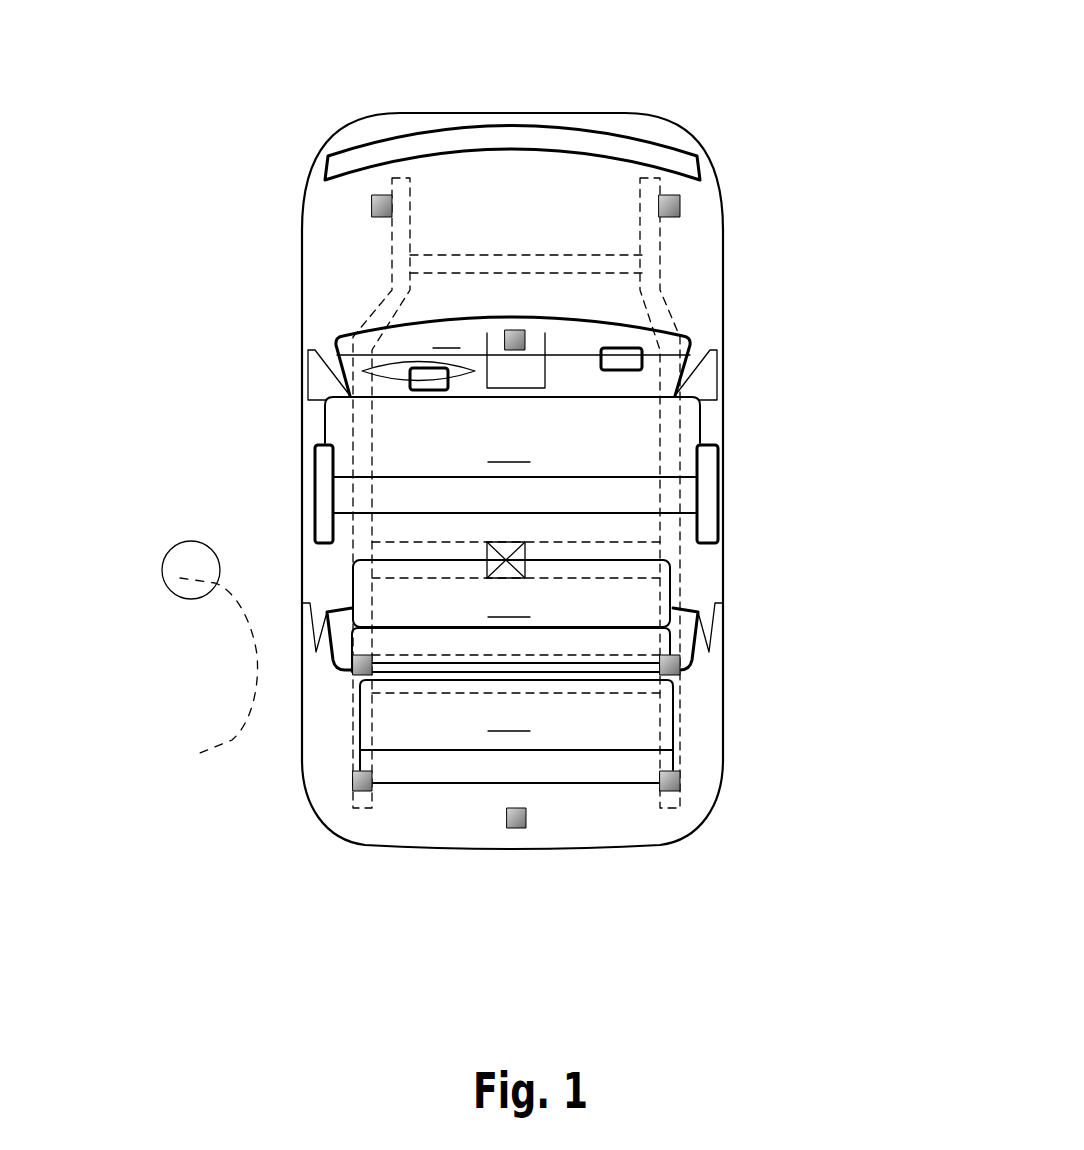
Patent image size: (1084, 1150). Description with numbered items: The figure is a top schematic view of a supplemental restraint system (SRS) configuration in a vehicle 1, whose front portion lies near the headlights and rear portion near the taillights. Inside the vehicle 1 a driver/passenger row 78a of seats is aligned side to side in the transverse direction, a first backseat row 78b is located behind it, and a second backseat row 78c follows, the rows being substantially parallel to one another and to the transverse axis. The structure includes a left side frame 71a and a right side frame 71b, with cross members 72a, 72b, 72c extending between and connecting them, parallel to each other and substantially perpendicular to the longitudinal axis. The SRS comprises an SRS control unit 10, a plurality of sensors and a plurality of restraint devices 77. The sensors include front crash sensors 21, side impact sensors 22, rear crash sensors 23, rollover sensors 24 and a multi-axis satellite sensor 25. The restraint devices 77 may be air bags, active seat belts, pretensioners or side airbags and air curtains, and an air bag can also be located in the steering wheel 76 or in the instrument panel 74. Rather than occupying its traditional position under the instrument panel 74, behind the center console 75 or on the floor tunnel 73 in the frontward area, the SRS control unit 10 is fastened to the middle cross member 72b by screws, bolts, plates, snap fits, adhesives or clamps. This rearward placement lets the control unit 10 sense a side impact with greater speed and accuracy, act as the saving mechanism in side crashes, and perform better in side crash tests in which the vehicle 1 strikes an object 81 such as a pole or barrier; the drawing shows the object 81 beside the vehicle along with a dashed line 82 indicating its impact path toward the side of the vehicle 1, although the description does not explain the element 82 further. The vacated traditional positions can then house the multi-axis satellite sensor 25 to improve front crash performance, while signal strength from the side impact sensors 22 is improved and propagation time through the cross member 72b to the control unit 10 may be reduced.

The vehicle 1 is at (298, 753).
The SRS control unit 10 is at (720, 483).
The front crash sensor 21 is at (372, 210).
The side impact sensor 22 is at (357, 657).
The rear crash sensor 23 is at (527, 830).
The rollover sensor 24 is at (451, 181).
The multi-axis satellite sensor 25 is at (504, 332).
The left side frame 71a is at (390, 293).
The right side frame 71b is at (660, 310).
The cross member 72a is at (536, 253).
The middle cross member 72b is at (583, 573).
The cross member 72c is at (623, 693).
The floor tunnel 73 is at (615, 199).
The instrument panel 74 is at (543, 363).
The center console 75 is at (615, 199).
The steering wheel 76 is at (368, 368).
The restraint device 77 is at (430, 390).
The driver/passenger row 78a is at (512, 431).
The first backseat row 78b is at (511, 616).
The second backseat row 78c is at (516, 731).
The object 81 is at (180, 541).
The communication link 82 is at (220, 673).